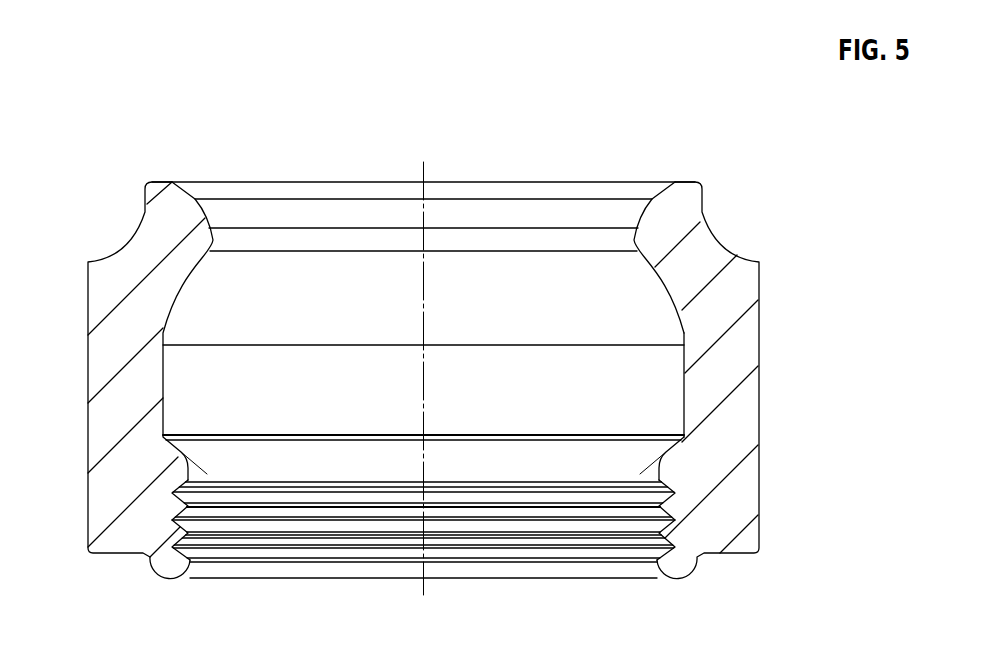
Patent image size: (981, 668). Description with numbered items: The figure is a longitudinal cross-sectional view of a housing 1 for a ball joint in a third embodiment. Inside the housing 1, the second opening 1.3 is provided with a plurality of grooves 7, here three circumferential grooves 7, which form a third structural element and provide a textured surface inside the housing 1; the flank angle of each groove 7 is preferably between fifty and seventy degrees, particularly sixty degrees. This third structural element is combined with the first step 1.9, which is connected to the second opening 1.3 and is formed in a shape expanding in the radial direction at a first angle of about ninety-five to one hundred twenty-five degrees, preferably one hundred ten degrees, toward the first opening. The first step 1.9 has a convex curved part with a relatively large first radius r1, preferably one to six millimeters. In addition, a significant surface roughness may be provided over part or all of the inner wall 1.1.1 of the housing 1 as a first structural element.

The housing 1 is at (763, 197).
The inner wall 1.1.1 is at (674, 359).
The first step 1.9 is at (671, 456).
The grooves 7 is at (660, 537).
The second opening 1.3 is at (575, 581).
The first radius r1 is at (177, 462).